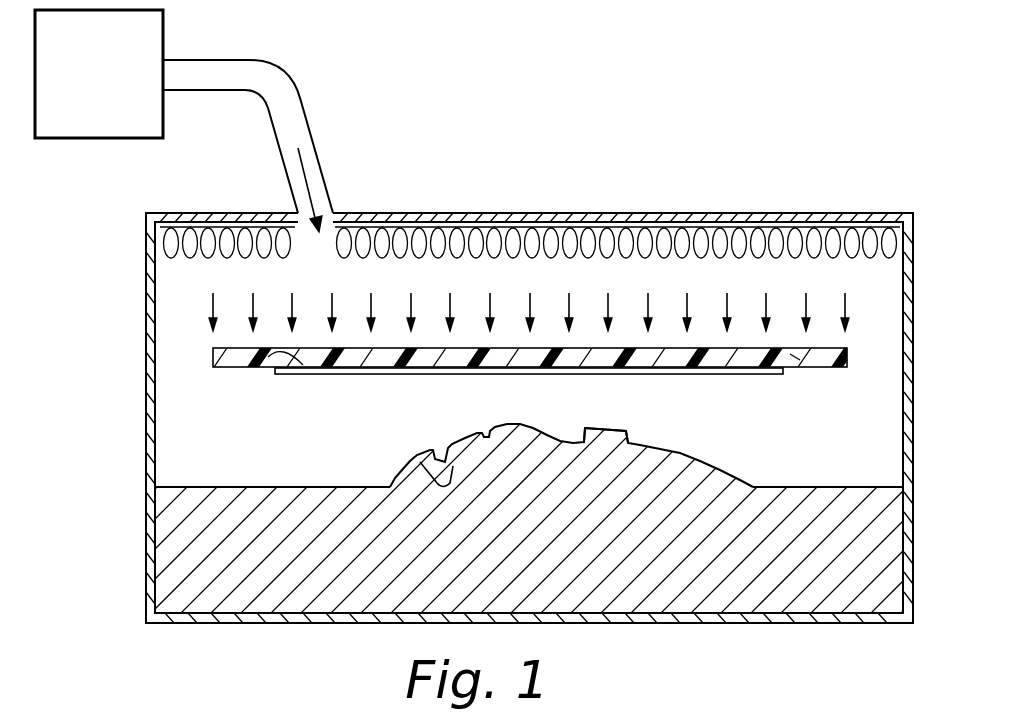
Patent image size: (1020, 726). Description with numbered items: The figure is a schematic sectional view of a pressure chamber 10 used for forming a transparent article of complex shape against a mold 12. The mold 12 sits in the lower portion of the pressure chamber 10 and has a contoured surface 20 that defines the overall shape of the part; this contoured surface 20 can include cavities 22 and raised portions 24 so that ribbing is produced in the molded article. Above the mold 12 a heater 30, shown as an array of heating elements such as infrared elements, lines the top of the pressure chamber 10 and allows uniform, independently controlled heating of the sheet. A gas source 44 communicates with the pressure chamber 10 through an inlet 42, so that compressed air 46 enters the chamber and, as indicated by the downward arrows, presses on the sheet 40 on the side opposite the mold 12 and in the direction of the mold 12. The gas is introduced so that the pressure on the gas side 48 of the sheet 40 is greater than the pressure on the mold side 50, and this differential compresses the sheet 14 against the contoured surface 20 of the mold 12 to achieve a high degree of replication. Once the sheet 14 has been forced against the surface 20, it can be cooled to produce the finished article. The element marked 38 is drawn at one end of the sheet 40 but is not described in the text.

The pressure chamber 10 is at (715, 212).
The mold 12 is at (215, 567).
The sheet 14 is at (495, 369).
The contoured surface 20 is at (712, 462).
The cavities 22 is at (420, 462).
The raised portions 24 is at (618, 430).
The heater 30 is at (640, 252).
The frame 38 is at (793, 357).
The sheet 40 is at (212, 360).
The inlet 42 is at (333, 212).
The gas source 44 is at (82, 85).
The compressed air 46 is at (303, 177).
The gas side 48 is at (270, 357).
The mold side 50 is at (348, 375).